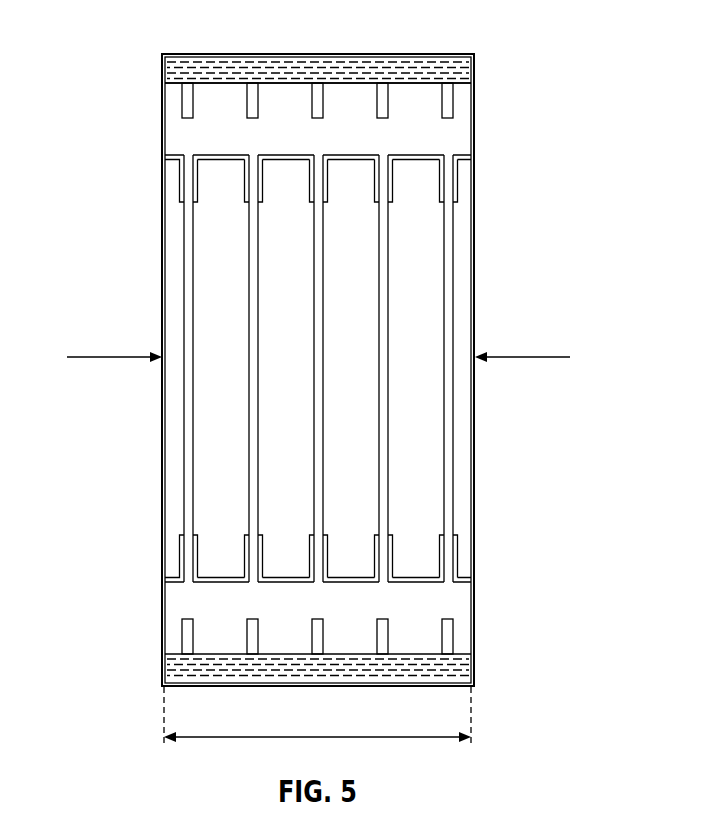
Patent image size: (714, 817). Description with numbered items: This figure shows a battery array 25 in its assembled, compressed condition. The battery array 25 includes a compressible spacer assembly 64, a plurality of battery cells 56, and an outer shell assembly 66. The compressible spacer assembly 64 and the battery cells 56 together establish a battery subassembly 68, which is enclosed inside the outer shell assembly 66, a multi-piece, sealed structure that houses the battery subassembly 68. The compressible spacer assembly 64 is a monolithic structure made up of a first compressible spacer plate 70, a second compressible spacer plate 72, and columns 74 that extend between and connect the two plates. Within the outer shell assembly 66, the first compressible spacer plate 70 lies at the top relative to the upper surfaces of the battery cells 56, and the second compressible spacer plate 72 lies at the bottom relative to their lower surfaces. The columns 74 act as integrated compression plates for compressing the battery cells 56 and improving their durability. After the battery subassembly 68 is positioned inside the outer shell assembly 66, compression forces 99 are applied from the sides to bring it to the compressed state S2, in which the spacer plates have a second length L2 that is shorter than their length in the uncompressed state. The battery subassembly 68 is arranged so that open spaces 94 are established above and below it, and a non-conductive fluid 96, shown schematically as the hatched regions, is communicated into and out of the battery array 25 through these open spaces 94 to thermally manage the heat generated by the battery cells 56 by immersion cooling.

The battery array 25 is at (550, 50).
The battery cells 56 is at (413, 230).
The compressible spacer assembly 64 is at (462, 126).
The outer shell assembly 66 is at (480, 244).
The battery subassembly 68 is at (186, 178).
The first compressible spacer plate 70 is at (227, 117).
The second compressible spacer plate 72 is at (212, 633).
The columns 74 is at (252, 483).
The open spaces 94 is at (320, 67).
The non-conductive fluid 96 is at (353, 70).
The compression forces 99 is at (85, 358).
The second length L2 is at (248, 738).
The compressed state S2 is at (236, 617).